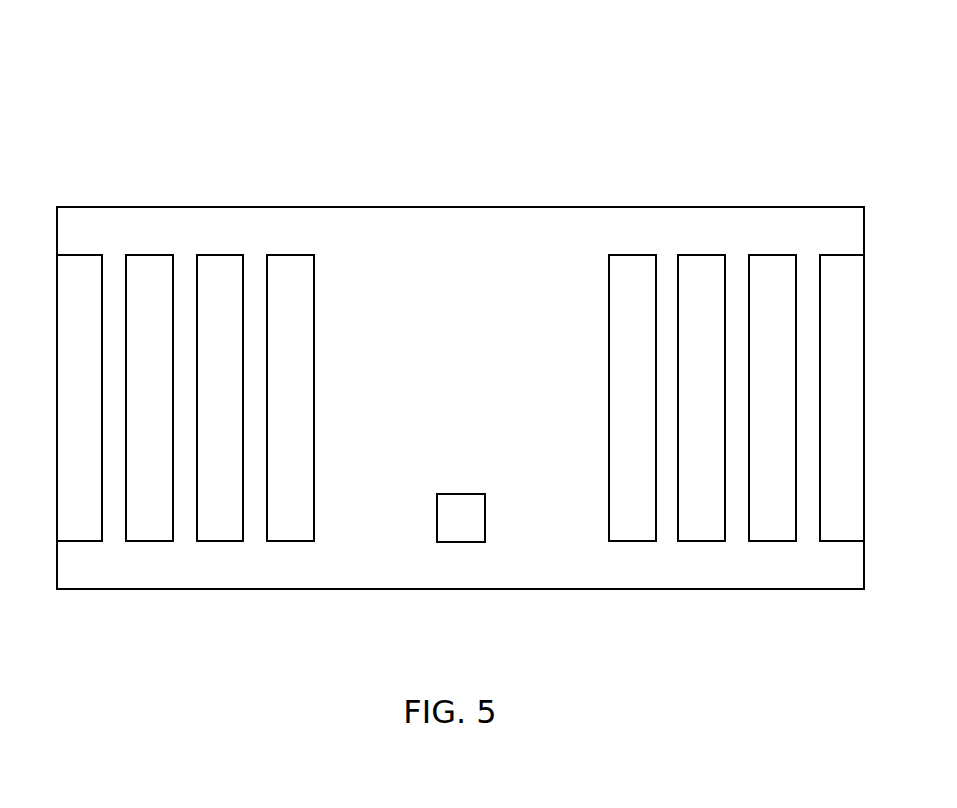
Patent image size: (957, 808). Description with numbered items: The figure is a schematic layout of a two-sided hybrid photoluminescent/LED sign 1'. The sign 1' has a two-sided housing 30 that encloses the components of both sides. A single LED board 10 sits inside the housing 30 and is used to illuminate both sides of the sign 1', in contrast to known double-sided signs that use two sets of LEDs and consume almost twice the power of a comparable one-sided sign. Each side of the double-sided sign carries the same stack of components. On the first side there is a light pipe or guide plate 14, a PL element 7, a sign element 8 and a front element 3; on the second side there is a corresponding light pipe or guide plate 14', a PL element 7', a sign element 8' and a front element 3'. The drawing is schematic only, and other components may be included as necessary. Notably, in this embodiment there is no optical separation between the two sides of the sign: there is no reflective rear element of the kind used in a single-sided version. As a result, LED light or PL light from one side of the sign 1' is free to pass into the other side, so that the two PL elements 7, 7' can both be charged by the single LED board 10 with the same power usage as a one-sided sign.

The two-sided sign 1' is at (460, 303).
The two-sided housing 30 is at (486, 207).
The front element 3 is at (92, 346).
The sign element 8 is at (161, 346).
The PL element 7 is at (232, 346).
The light pipe or guide plate 14 is at (305, 346).
The light pipe or guide plate 14' is at (615, 346).
The PL element 7' is at (688, 346).
The sign element 8' is at (759, 346).
The front element 3' is at (828, 346).
The LED board 10 is at (461, 542).